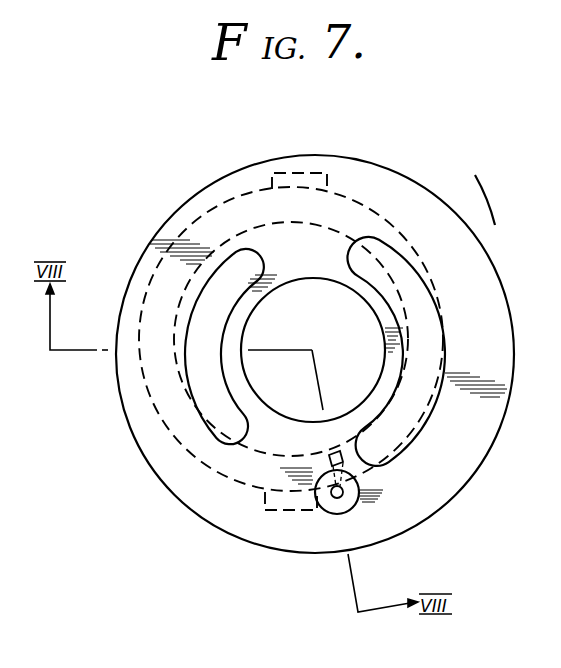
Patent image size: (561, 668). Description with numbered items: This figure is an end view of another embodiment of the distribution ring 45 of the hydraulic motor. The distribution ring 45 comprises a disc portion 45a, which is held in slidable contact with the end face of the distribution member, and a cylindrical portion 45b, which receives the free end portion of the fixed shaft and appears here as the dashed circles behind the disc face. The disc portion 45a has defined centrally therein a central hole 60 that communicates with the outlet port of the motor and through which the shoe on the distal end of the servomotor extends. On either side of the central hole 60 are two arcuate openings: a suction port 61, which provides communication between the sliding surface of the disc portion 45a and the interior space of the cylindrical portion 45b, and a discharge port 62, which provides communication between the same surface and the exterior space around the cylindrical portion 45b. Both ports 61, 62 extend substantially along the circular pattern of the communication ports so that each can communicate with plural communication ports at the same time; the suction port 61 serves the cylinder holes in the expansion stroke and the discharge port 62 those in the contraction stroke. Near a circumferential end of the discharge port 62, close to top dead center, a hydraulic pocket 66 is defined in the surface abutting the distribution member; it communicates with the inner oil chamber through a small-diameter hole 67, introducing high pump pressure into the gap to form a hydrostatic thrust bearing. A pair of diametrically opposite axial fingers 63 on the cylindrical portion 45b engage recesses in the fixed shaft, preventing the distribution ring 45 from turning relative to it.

The distribution ring 45 is at (207, 179).
The disc portion 45a is at (443, 225).
The cylindrical portion 45b is at (384, 208).
The central hole 60 is at (288, 284).
The suction port 61 is at (187, 317).
The discharge port 62 is at (444, 355).
The axial fingers 63 is at (302, 173).
The hydraulic pocket 66 is at (359, 497).
The small-diameter hole 67 is at (327, 454).